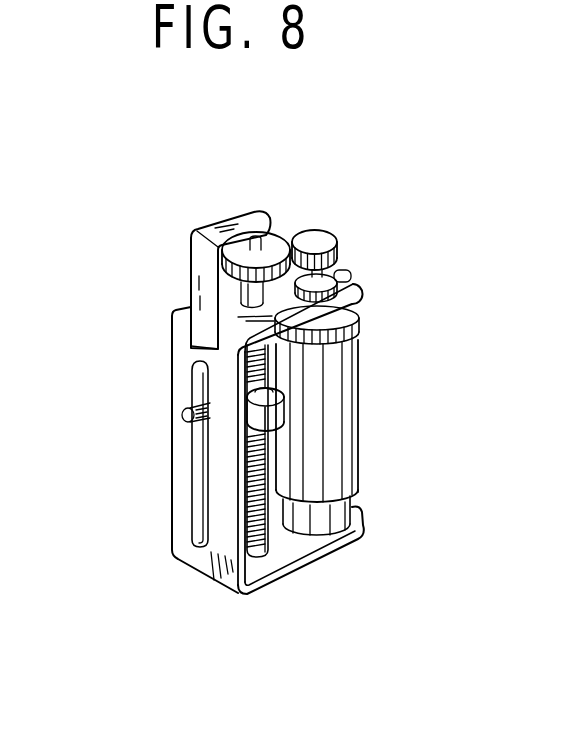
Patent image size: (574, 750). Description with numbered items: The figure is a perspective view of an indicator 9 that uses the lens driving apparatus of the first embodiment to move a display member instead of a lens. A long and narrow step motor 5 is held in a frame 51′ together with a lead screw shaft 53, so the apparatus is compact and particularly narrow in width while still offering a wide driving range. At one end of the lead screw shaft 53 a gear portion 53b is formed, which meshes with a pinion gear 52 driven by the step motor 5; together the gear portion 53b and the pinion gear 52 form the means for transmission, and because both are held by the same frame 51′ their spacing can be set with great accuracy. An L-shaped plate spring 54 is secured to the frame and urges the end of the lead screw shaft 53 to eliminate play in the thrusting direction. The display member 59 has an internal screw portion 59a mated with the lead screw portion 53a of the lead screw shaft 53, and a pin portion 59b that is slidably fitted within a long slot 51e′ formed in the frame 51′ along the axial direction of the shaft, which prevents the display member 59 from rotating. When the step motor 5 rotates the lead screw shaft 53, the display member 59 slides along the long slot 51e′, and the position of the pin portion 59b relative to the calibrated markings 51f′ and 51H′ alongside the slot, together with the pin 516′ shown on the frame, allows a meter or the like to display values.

The step motor 5 is at (340, 460).
The indicator 9 is at (163, 465).
The frame 51′ is at (188, 556).
The long slot 51e′ is at (200, 513).
The marking 51f′ is at (220, 451).
The marking 51H′ is at (229, 400).
The engaging pin 516′ is at (229, 430).
The pinion gear 52 is at (335, 241).
The lead screw shaft 53 is at (264, 533).
The lead screw portion 53a is at (270, 535).
The gear portion 53b is at (278, 245).
The L-shaped plate spring 54 is at (240, 216).
The display member 59 is at (283, 418).
The internal screw portion 59a is at (280, 393).
The pin portion 59b is at (183, 412).